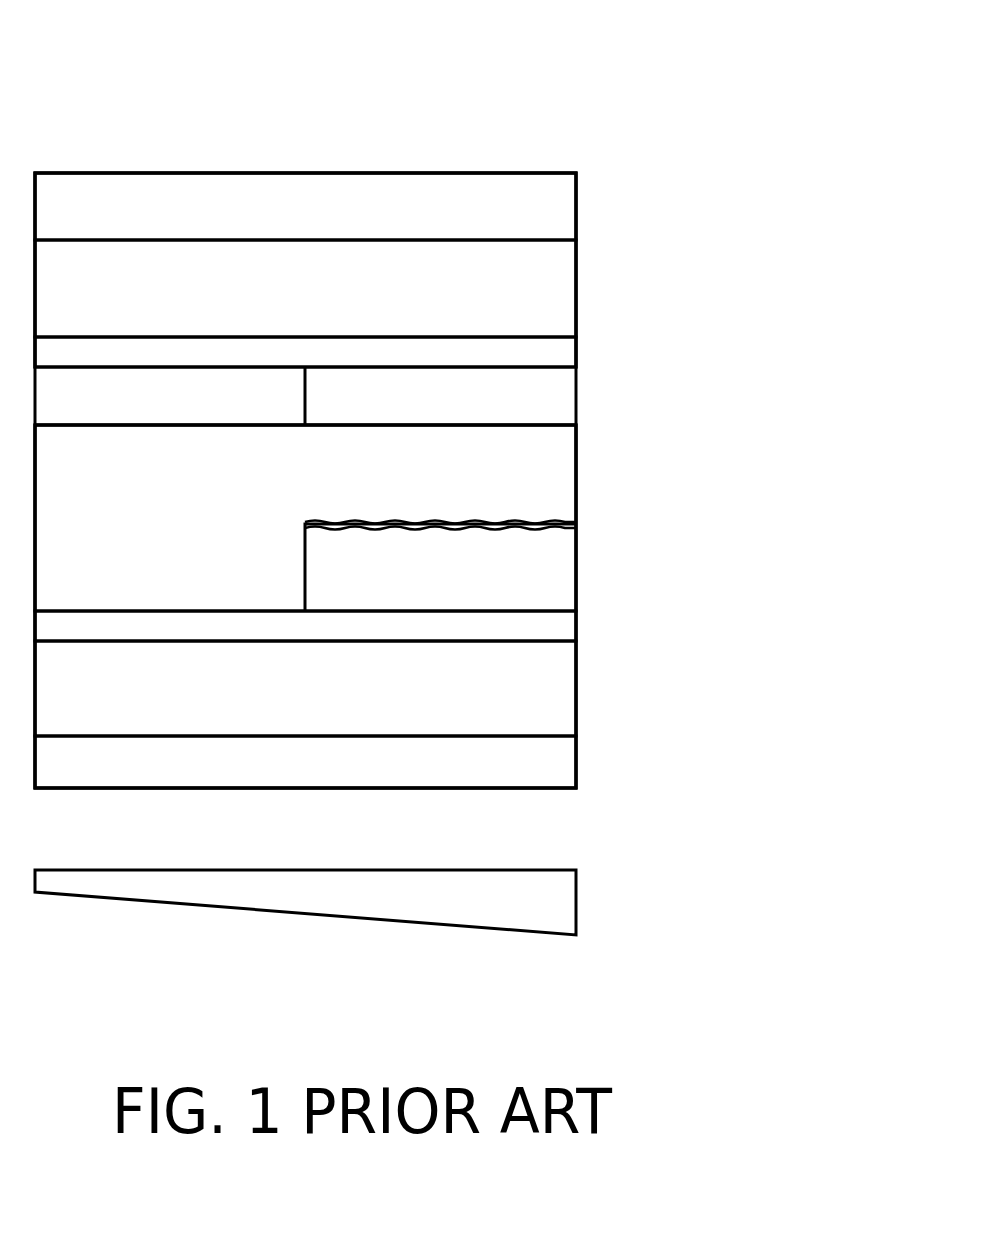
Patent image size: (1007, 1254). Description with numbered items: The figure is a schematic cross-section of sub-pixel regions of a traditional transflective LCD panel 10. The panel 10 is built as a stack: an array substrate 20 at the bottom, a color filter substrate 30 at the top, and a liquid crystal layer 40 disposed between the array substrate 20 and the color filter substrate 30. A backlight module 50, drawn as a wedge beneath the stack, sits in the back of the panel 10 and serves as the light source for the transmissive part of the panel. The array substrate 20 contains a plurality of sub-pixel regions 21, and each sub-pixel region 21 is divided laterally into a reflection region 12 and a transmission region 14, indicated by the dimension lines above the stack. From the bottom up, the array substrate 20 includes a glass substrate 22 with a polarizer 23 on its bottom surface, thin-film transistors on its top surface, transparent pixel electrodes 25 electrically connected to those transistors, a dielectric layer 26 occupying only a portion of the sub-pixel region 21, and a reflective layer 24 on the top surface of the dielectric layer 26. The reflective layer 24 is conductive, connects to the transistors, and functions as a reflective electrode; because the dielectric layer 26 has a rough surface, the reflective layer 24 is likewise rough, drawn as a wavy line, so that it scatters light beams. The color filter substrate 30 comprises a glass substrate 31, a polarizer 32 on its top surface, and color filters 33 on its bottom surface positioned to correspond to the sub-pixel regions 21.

The traditional transflective LCD panel 10 is at (770, 652).
The reflection region 12 is at (305, 151).
The transmission region 14 is at (35, 165).
The array substrate 20 is at (680, 492).
The sub-pixel region 21 is at (35, 125).
The glass substrate 22 is at (576, 695).
The polarizer 23 is at (576, 752).
The reflective layer 24 is at (576, 527).
The transparent pixel electrode 25 is at (576, 628).
The dielectric layer 26 is at (576, 576).
The color filter substrate 30 is at (660, 150).
The glass substrate 31 is at (560, 298).
The polarizer 32 is at (560, 208).
The color filter 33 is at (560, 356).
The liquid crystal layer 40 is at (560, 486).
The backlight module 50 is at (572, 903).